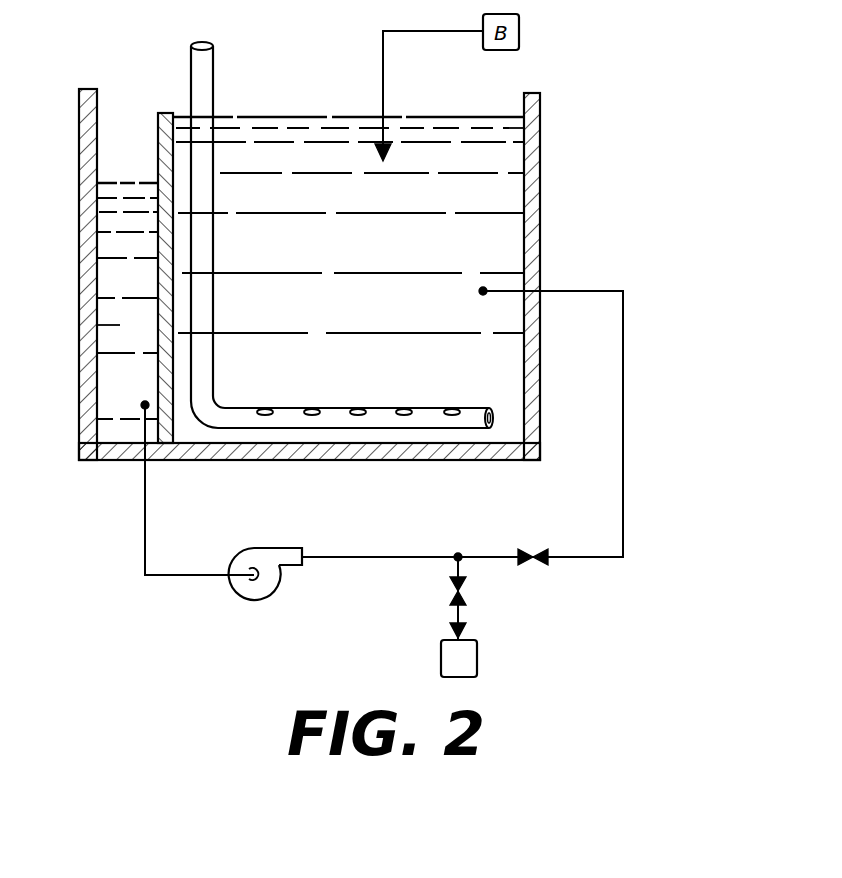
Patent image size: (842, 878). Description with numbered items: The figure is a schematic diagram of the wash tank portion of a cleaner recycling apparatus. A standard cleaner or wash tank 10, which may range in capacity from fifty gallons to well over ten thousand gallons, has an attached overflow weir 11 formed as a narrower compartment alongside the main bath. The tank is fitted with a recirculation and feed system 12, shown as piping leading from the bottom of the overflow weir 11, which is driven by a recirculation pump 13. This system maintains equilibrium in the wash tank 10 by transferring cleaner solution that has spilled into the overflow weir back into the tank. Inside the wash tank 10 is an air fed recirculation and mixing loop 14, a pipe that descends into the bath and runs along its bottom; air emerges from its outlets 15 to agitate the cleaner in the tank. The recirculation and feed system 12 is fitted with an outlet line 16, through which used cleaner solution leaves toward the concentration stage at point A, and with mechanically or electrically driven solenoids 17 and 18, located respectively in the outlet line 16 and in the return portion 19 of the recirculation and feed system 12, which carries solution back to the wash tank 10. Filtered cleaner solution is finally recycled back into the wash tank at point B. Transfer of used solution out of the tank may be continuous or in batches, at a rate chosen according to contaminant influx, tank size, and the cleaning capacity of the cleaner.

The wash tank 10 is at (540, 168).
The overflow weir 11 is at (97, 325).
The recirculation and feed system 12 is at (145, 506).
The recirculation pump 13 is at (237, 590).
The air fed recirculation and mixing loop 14 is at (203, 75).
The outlets 15 is at (268, 405).
The outlet line 16 is at (460, 614).
The solenoid 17 is at (450, 591).
The solenoid 18 is at (533, 548).
The return portion 19 is at (612, 565).